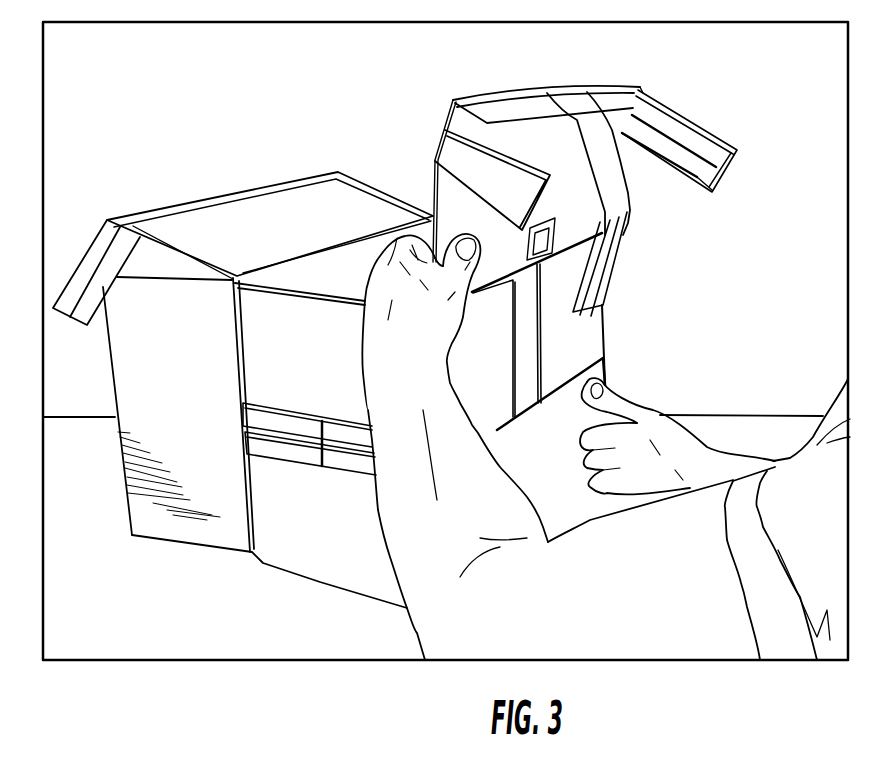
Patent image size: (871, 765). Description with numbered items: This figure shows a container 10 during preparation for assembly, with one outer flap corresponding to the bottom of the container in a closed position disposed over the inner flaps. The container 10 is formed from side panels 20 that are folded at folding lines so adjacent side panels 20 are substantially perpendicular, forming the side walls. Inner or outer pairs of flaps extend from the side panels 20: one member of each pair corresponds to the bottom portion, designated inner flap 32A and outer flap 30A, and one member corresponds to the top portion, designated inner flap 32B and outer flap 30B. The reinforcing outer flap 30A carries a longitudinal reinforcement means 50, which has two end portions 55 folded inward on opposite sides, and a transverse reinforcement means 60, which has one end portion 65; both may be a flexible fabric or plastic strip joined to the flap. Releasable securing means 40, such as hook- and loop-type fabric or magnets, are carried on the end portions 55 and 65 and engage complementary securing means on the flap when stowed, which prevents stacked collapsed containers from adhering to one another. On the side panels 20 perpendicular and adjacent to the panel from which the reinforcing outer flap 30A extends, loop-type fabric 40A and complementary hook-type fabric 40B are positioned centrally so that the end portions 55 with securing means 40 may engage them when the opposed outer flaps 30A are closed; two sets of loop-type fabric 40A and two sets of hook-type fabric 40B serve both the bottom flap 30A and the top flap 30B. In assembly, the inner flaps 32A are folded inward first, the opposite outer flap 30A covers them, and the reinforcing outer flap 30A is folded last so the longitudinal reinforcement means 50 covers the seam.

The container 10 is at (180, 173).
The side panel 20 is at (323, 279).
The outer flap 30A is at (551, 212).
The outer flap 30B is at (263, 238).
The inner flap 32A is at (465, 362).
The inner flap 32B is at (162, 416).
The releasable securing means 40 is at (690, 163).
The loop-type fabric 40A is at (354, 462).
The hook-type fabric 40B is at (352, 435).
The longitudinal reinforcement means 50 is at (223, 203).
The end portion 55 is at (727, 168).
The transverse reinforcement means 60 is at (605, 150).
The end portion 65 is at (635, 270).